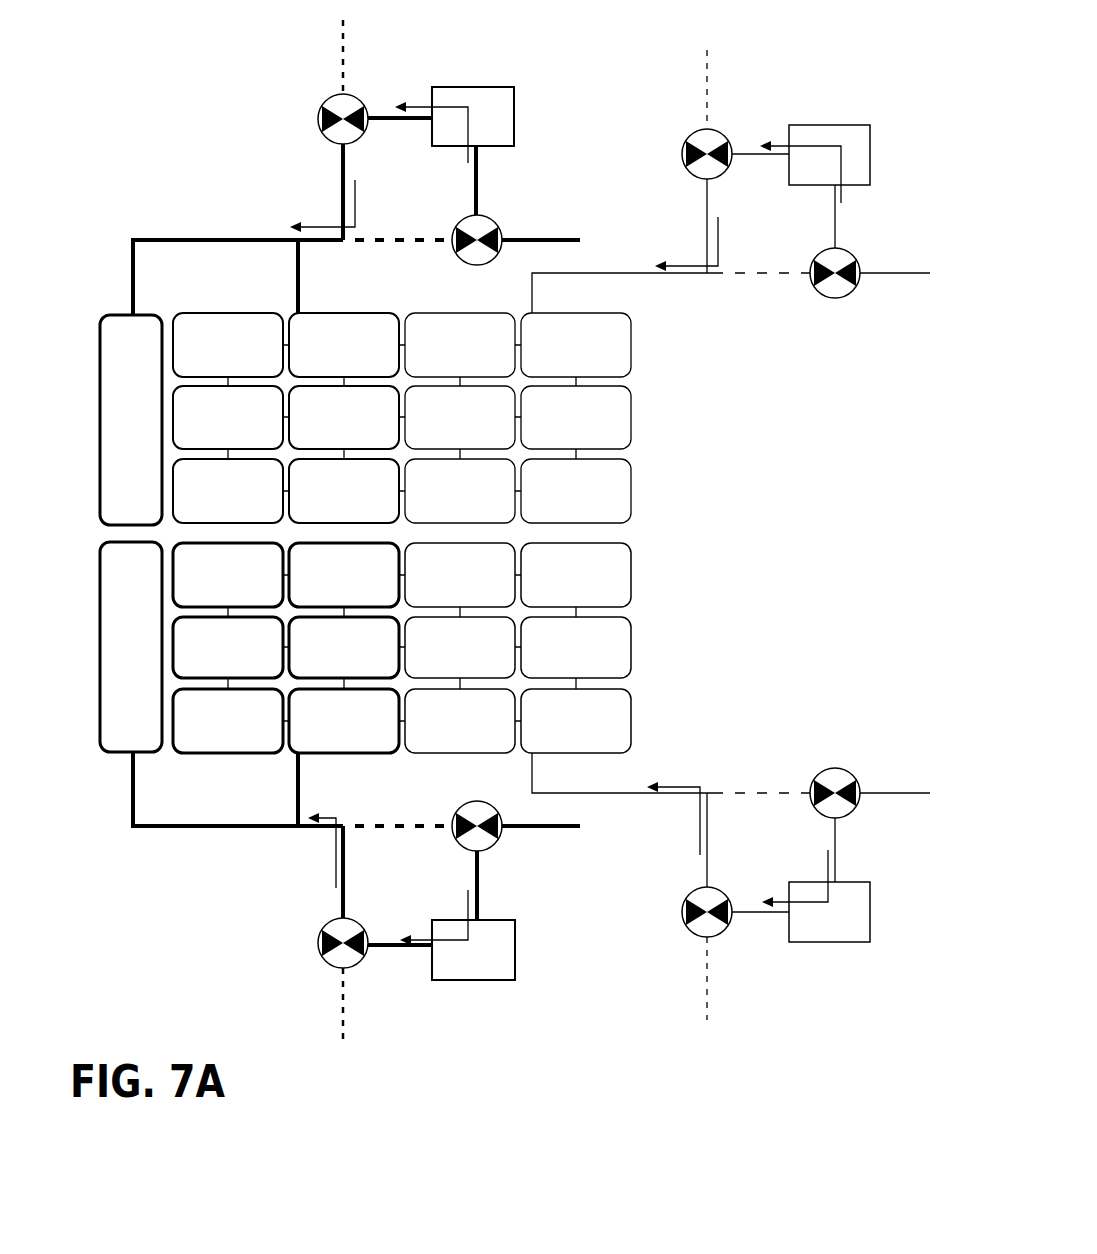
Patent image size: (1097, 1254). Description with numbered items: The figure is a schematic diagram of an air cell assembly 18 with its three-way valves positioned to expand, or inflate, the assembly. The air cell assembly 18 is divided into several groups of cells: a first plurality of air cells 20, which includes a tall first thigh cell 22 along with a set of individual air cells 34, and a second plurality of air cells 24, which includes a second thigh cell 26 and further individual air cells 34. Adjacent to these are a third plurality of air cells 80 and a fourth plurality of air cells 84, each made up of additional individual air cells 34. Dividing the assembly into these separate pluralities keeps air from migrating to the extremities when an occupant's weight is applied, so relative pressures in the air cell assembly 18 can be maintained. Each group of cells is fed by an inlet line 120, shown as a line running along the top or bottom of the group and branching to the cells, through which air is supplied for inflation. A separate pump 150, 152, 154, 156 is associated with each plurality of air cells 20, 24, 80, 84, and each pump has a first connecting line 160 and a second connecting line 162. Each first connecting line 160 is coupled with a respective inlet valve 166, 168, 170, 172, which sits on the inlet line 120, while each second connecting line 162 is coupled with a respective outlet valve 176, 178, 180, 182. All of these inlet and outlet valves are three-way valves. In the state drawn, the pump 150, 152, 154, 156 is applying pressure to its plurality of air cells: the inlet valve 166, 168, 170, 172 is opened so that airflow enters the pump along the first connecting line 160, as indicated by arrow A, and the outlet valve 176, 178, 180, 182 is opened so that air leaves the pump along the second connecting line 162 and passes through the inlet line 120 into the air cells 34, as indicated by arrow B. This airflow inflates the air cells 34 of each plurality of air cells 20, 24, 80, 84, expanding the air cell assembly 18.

The air cell assembly 18 is at (152, 122).
The first plurality of air cells 20 is at (235, 300).
The first thigh cell 22 is at (115, 442).
The second plurality of air cells 24 is at (312, 776).
The second thigh cell 26 is at (118, 627).
The individual air cell 34 is at (190, 410).
The third plurality of air cells 80 is at (655, 454).
The fourth plurality of air cells 84 is at (664, 679).
The inlet line 120 is at (180, 240).
The pump 150 is at (492, 85).
The pump 152 is at (467, 980).
The pump 154 is at (835, 125).
The pump 156 is at (828, 942).
The first connecting line 160 is at (480, 190).
The second connecting line 162 is at (385, 112).
The inlet valve 166 is at (500, 230).
The inlet valve 168 is at (500, 838).
The inlet valve 170 is at (858, 265).
The inlet valve 172 is at (860, 782).
The outlet valve 176 is at (355, 95).
The outlet valve 178 is at (318, 943).
The outlet valve 180 is at (717, 130).
The outlet valve 182 is at (725, 930).